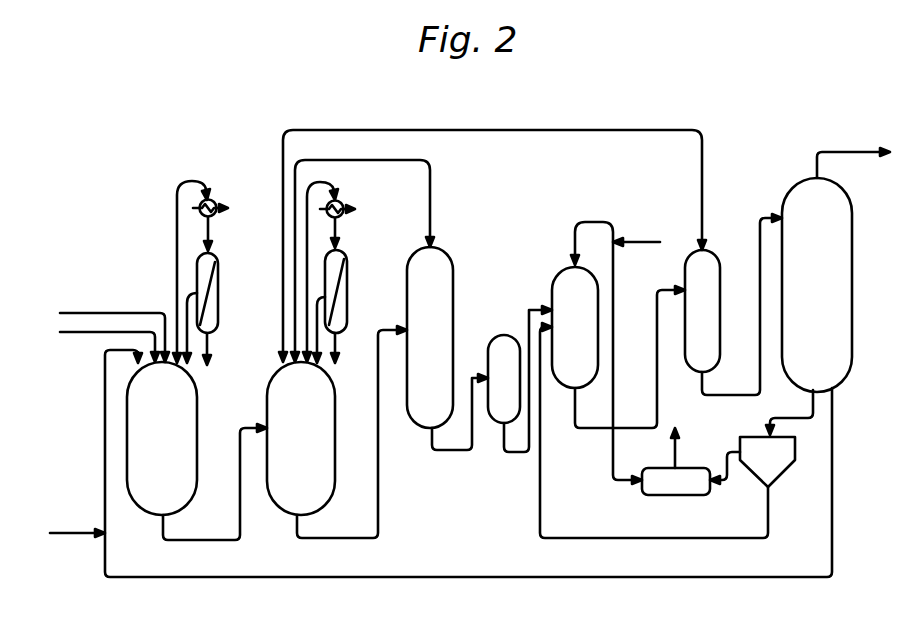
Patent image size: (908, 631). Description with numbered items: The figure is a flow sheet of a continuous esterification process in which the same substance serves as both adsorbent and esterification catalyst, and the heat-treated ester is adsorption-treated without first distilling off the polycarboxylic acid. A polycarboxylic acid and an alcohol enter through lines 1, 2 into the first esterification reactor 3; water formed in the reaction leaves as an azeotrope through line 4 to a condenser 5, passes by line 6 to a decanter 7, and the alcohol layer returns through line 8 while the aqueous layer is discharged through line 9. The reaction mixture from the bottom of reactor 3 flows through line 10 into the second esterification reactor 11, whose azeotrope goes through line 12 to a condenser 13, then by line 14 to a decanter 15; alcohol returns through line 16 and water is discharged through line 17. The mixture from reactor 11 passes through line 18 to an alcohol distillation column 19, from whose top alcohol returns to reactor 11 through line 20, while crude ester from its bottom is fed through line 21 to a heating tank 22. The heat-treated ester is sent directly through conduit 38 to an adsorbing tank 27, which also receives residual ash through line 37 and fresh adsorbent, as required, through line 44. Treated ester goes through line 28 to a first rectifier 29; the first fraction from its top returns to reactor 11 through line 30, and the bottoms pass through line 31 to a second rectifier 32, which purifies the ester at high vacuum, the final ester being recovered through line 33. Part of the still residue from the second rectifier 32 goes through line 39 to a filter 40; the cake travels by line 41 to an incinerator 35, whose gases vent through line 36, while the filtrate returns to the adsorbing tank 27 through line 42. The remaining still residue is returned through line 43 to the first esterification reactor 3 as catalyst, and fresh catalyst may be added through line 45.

The line 1 is at (103, 315).
The line 2 is at (84, 332).
The first esterification reactor 3 is at (162, 438).
The line 4 is at (176, 238).
The condenser 5 is at (211, 198).
The line 6 is at (210, 228).
The decanter 7 is at (219, 300).
The line 8 is at (190, 360).
The line 9 is at (209, 350).
The line 10 is at (196, 539).
The second esterification reactor 11 is at (301, 438).
The line 12 is at (305, 266).
The condenser 13 is at (339, 198).
The line 14 is at (337, 228).
The decanter 15 is at (347, 300).
The line 16 is at (319, 358).
The line 17 is at (337, 350).
The line 18 is at (379, 520).
The alcohol distillation column 19 is at (430, 337).
The line 20 is at (431, 186).
The line 21 is at (452, 451).
The heating tank 22 is at (490, 338).
The adsorbing tank 27 is at (575, 327).
The line 28 is at (584, 430).
The first rectifier 29 is at (720, 322).
The line 30 is at (593, 130).
The line 31 is at (740, 397).
The second rectifier 32 is at (817, 285).
The line 33 is at (859, 152).
The incinerator 35 is at (670, 497).
The line 36 is at (677, 442).
The line 37 is at (615, 482).
The conduit 38 is at (516, 455).
The line 39 is at (802, 418).
The filter 40 is at (776, 480).
The line 41 is at (730, 482).
The line 42 is at (668, 540).
The line 43 is at (462, 580).
The line 44 is at (653, 242).
The line 45 is at (61, 533).